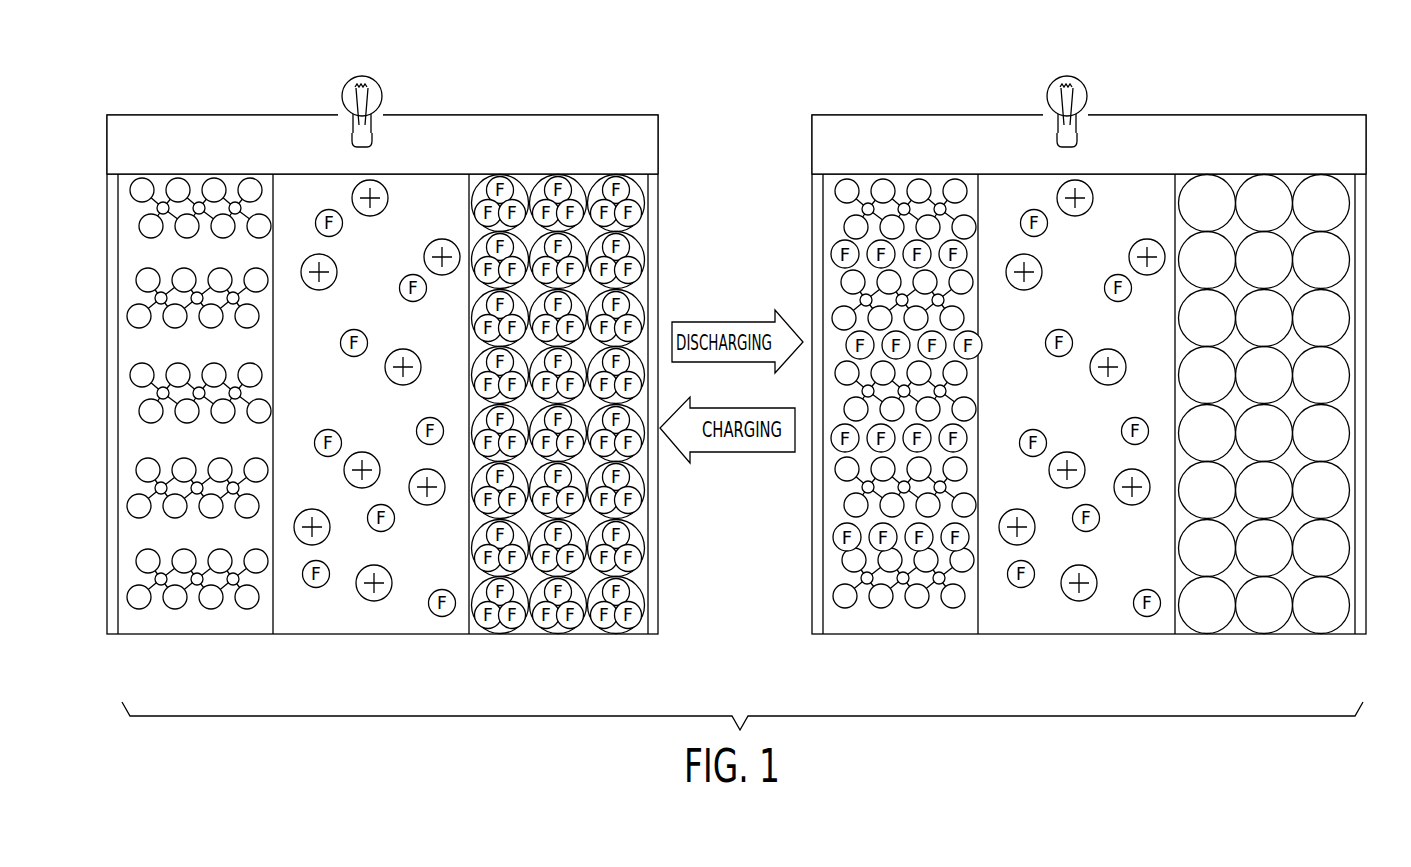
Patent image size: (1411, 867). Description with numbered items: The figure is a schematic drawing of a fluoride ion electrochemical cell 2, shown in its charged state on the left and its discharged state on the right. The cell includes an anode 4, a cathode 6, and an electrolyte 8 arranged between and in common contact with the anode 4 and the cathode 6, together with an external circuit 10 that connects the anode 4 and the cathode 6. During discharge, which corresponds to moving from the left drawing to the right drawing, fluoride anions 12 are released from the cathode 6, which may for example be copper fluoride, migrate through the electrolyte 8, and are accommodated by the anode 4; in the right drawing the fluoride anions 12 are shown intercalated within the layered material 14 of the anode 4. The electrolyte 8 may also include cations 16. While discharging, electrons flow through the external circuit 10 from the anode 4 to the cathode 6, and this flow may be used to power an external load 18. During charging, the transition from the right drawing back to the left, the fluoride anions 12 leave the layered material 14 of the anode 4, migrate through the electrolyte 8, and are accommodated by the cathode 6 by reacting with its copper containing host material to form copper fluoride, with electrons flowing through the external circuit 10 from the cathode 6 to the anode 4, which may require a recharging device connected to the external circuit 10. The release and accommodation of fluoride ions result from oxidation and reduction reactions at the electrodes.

The fluoride ion electrochemical cell 2 is at (165, 65).
The anode 4 is at (150, 174).
The cathode 6 is at (641, 174).
The electrolyte 8 is at (456, 212).
The external circuit 10 is at (228, 115).
The fluoride anions 12 is at (400, 283).
The layered material 14 is at (130, 392).
The cations 16 is at (437, 240).
The external load 18 is at (381, 90).